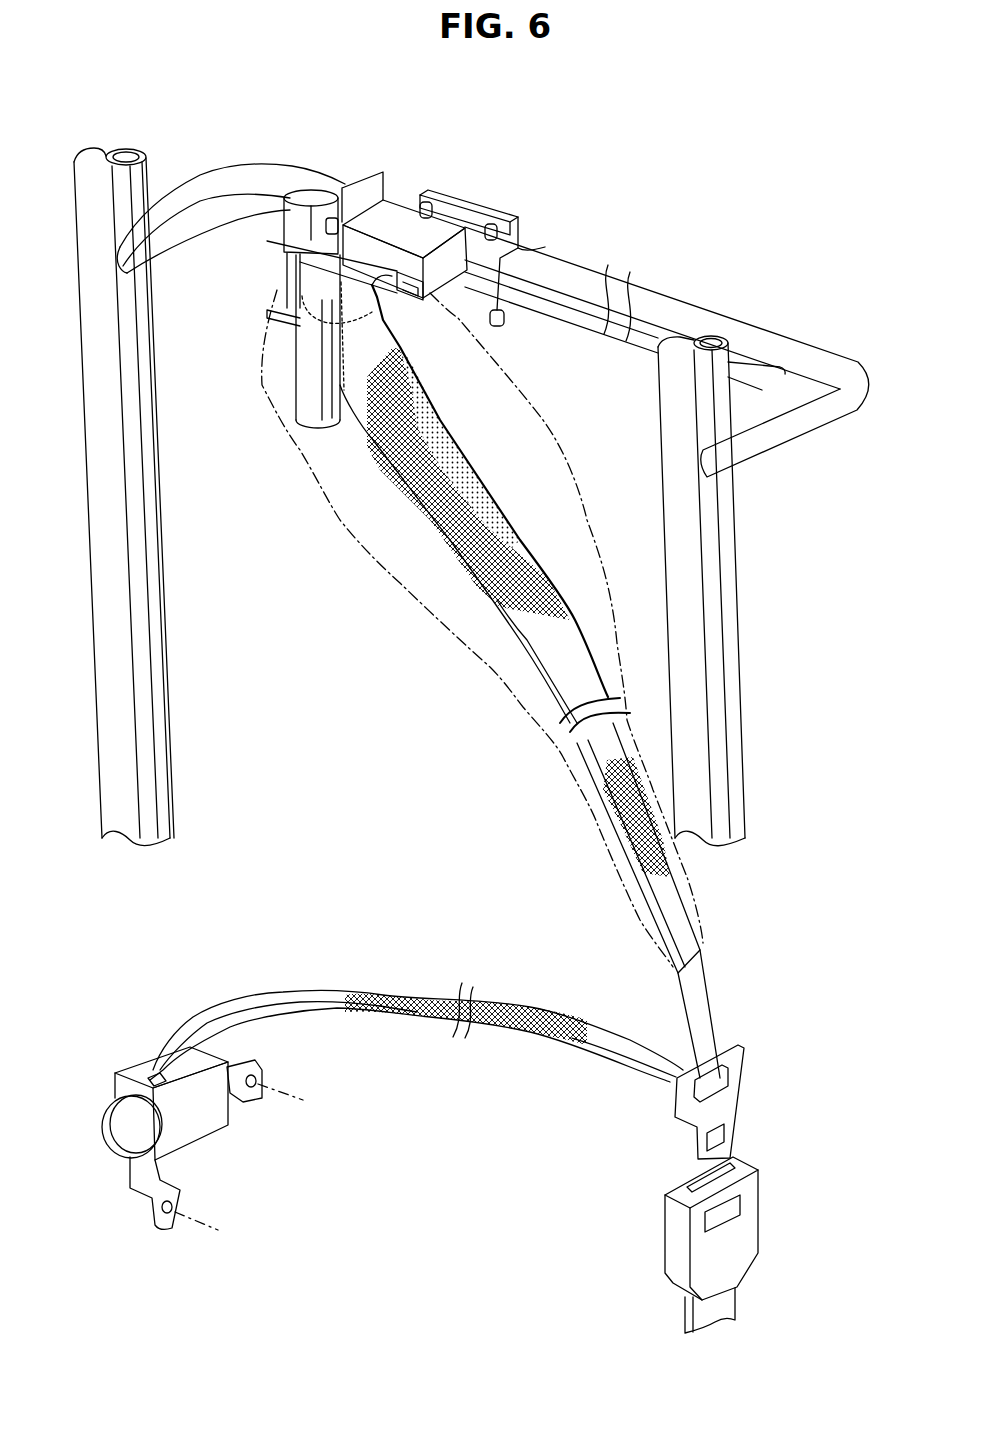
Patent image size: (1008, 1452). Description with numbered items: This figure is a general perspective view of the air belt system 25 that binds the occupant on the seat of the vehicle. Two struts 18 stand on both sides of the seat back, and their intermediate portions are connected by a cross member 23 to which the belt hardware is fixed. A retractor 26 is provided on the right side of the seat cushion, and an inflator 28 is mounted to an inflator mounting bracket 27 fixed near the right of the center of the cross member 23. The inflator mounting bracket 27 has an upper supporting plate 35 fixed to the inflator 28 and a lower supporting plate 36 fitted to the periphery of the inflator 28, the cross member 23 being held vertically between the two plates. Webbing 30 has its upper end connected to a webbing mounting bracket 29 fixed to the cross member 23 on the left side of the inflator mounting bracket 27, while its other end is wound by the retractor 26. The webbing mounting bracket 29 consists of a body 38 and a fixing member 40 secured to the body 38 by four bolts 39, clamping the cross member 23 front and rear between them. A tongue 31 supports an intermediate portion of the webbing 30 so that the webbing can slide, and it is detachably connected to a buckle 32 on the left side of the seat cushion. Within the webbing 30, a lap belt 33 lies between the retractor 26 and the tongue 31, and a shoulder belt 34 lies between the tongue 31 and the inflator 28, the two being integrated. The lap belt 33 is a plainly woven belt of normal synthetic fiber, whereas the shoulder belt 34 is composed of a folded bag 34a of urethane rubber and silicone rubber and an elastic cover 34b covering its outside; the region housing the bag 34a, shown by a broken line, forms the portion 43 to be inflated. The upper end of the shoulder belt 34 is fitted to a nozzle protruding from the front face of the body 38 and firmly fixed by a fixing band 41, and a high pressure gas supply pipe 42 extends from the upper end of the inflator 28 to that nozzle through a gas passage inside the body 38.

The struts 18 is at (147, 692).
The cross member 23 is at (668, 302).
The air belt system 25 is at (435, 683).
The retractor 26 is at (134, 1060).
The inflator mounting bracket 27 is at (409, 260).
The inflator 28 is at (296, 395).
The webbing mounting bracket 29 is at (503, 205).
The webbing 30 is at (435, 683).
The tongue 31 is at (720, 1110).
The buckle 32 is at (663, 1250).
The lap belt 33 is at (416, 989).
The shoulder belt 34 is at (530, 681).
The folded bag 34a is at (477, 490).
The elastic cover 34b is at (547, 577).
The upper supporting plate 35 is at (265, 242).
The lower supporting plate 36 is at (265, 310).
The body of the bracket 38 is at (403, 220).
The bolts 39 is at (424, 212).
The fixing member 40 is at (527, 247).
The fixing band 41 is at (388, 307).
The high pressure gas supply pipe 42 is at (340, 223).
The portion to be inflated 43 is at (350, 535).